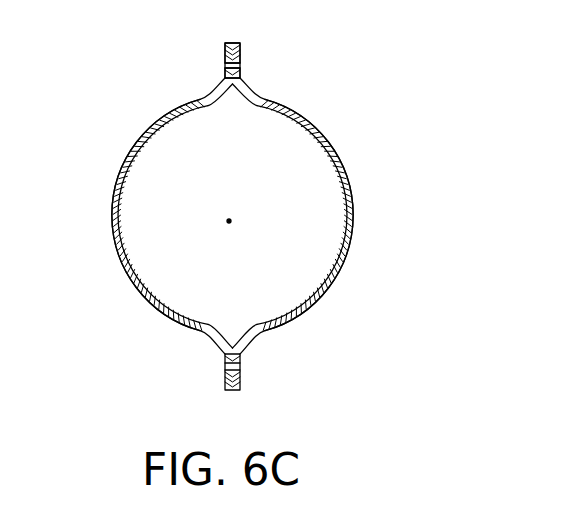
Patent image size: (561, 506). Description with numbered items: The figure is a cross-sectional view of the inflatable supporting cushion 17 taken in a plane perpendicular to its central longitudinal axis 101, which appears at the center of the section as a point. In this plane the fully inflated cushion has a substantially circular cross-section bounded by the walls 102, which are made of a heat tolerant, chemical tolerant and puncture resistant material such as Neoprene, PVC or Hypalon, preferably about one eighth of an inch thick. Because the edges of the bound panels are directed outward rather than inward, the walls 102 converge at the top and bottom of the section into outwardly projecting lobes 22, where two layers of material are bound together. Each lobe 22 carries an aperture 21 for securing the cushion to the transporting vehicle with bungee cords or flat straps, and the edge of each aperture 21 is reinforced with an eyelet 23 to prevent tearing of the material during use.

The inflatable supporting cushion 17 is at (100, 211).
The aperture 21 is at (272, 60).
The lobe 22 is at (228, 44).
The eyelet 23 is at (226, 77).
The central longitudinal axis 101 is at (229, 221).
The wall 102 is at (351, 197).